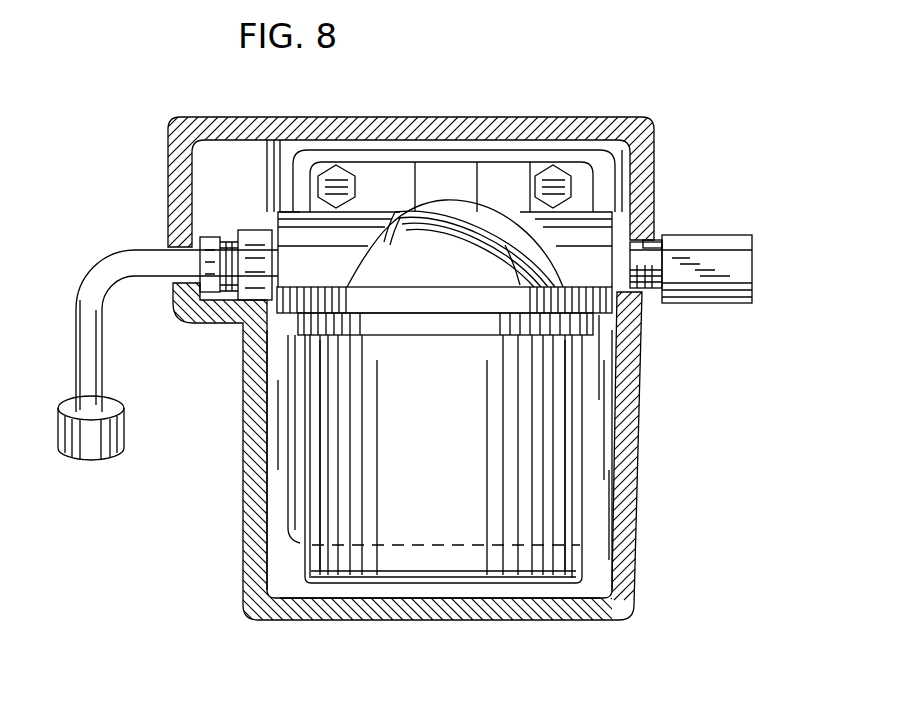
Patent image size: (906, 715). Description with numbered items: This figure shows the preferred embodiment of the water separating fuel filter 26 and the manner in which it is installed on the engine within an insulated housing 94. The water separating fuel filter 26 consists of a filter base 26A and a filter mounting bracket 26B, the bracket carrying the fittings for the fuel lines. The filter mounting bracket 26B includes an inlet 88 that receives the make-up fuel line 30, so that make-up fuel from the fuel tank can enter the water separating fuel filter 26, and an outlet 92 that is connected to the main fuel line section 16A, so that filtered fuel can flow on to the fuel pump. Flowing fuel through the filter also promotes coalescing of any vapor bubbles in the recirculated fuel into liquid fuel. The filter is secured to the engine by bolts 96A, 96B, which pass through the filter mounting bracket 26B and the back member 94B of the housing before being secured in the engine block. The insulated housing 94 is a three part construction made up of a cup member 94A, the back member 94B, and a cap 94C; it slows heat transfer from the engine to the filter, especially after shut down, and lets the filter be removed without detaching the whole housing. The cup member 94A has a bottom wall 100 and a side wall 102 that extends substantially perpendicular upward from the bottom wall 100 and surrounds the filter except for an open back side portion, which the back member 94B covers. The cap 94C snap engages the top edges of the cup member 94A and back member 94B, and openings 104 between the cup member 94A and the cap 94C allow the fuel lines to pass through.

The main fuel line section 16A is at (105, 383).
The water separating fuel filter 26 is at (573, 413).
The filter base 26A is at (560, 503).
The filter mounting bracket 26B is at (503, 178).
The make-up fuel line 30 is at (715, 242).
The inlet 88 is at (598, 228).
The outlet 92 is at (288, 216).
The insulated housing 94 is at (627, 617).
The cup member 94A is at (507, 620).
The back member 94B is at (590, 447).
The cap 94C is at (632, 118).
The bolt 96A is at (565, 178).
The bolt 96B is at (340, 182).
The bottom wall 100 is at (340, 620).
The side wall 102 is at (252, 482).
The openings 104 is at (158, 250).